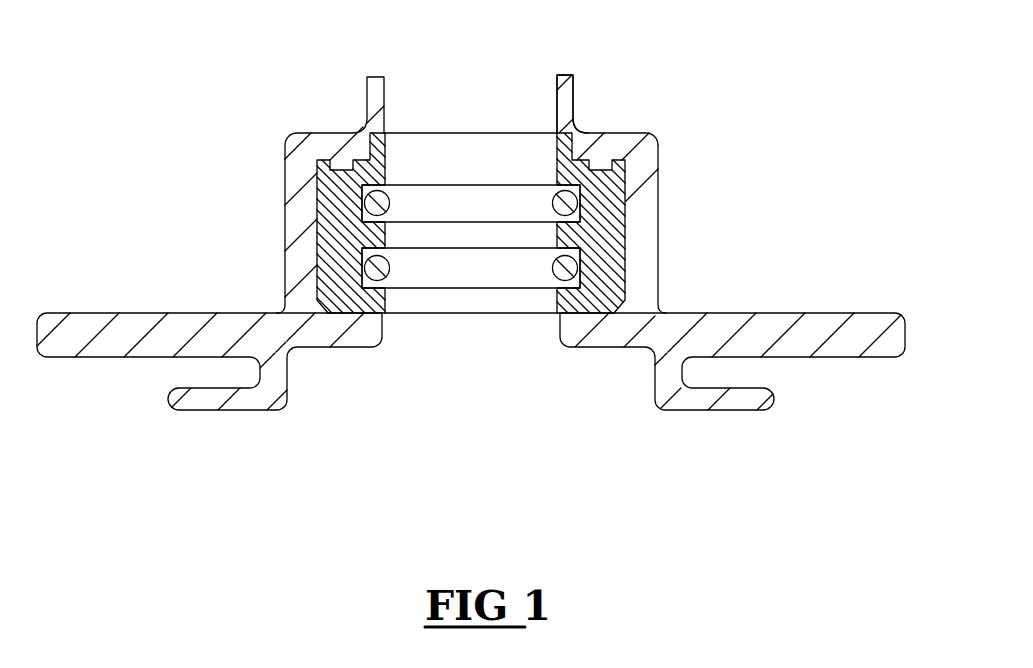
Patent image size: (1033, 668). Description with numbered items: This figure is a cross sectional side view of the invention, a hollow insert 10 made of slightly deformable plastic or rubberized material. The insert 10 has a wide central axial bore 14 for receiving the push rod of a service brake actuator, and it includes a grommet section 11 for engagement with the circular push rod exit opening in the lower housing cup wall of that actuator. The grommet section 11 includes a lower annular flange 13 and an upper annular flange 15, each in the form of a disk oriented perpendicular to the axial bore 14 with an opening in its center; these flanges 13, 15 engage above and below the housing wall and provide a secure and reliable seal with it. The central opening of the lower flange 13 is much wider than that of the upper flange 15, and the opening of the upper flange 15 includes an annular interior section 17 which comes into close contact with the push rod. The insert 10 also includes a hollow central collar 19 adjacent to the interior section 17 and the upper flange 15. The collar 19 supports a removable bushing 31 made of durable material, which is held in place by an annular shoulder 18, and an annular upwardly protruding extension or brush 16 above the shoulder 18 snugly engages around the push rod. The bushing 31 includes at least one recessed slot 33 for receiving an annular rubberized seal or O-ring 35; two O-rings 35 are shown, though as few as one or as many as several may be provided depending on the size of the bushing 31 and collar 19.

The hollow insert 10 is at (742, 135).
The grommet section 11 is at (277, 380).
The lower annular flange 13 is at (203, 402).
The central axial bore 14 is at (532, 138).
The upper annular flange 15 is at (138, 318).
The upwardly protruding extension or brush 16 is at (581, 73).
The annular interior section 17 is at (363, 342).
The annular shoulder 18 is at (653, 130).
The hollow central collar 19 is at (650, 208).
The removable bushing 31 is at (607, 273).
The recessed slot 33 is at (468, 207).
The O-ring 35 is at (388, 200).